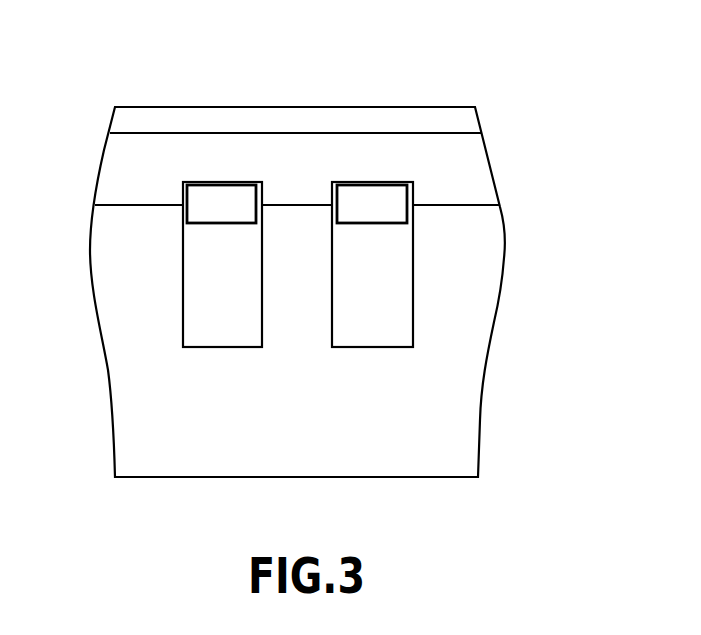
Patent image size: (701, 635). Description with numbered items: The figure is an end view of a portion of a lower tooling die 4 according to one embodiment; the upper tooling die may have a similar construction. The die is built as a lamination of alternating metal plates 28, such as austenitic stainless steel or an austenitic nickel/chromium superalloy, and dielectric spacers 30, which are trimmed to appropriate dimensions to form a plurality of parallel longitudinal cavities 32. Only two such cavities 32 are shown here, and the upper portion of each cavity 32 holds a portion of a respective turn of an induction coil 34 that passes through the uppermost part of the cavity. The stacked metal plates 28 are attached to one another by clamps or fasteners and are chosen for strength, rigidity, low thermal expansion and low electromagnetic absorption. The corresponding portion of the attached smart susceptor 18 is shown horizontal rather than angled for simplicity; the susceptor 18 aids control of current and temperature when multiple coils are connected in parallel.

The smart susceptor 18 is at (372, 122).
The metal plate 28 is at (465, 173).
The dielectric spacer 30 is at (452, 395).
The cavity 32 is at (183, 323).
The induction coil 34 is at (223, 225).
The lower tooling die 4 is at (248, 60).